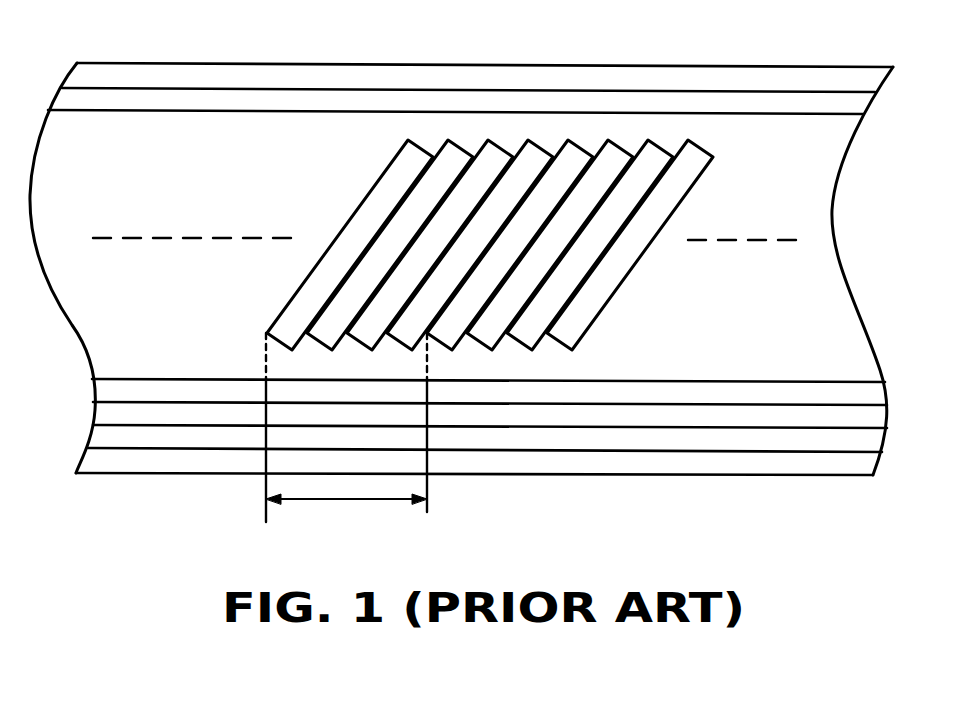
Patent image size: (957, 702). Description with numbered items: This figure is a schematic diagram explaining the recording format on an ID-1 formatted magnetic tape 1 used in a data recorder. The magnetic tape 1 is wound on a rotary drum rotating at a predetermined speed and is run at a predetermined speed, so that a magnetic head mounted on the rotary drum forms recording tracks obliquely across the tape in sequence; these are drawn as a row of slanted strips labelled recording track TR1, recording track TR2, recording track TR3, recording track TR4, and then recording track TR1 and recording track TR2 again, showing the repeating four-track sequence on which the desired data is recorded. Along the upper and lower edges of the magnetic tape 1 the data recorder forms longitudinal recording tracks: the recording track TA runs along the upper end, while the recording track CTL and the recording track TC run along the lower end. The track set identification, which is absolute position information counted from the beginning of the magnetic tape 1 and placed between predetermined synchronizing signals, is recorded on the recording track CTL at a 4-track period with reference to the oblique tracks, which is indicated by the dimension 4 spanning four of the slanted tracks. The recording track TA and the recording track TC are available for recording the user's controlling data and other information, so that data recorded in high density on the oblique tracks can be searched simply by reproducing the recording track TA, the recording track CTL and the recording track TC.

The magnetic tape 1 is at (820, 215).
The recording track TA is at (848, 108).
The recording track CTL is at (702, 388).
The recording track TC is at (701, 438).
The recording track TR1 is at (417, 142).
The recording track TR2 is at (462, 147).
The recording track TR3 is at (508, 150).
The recording track TR4 is at (547, 150).
The 4-track period 4 is at (346, 433).